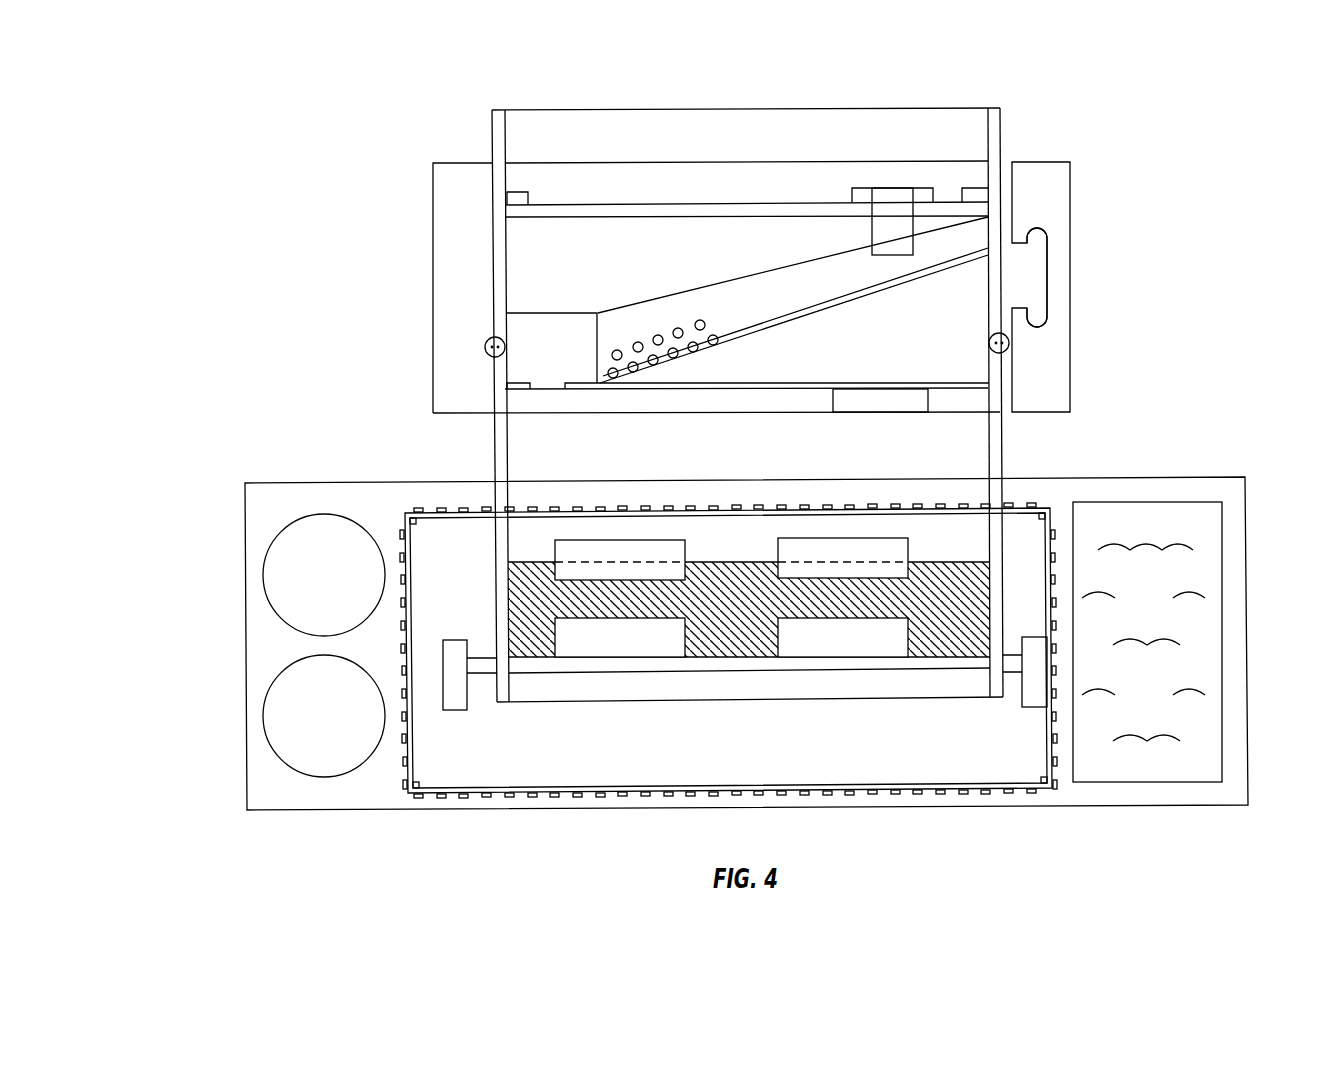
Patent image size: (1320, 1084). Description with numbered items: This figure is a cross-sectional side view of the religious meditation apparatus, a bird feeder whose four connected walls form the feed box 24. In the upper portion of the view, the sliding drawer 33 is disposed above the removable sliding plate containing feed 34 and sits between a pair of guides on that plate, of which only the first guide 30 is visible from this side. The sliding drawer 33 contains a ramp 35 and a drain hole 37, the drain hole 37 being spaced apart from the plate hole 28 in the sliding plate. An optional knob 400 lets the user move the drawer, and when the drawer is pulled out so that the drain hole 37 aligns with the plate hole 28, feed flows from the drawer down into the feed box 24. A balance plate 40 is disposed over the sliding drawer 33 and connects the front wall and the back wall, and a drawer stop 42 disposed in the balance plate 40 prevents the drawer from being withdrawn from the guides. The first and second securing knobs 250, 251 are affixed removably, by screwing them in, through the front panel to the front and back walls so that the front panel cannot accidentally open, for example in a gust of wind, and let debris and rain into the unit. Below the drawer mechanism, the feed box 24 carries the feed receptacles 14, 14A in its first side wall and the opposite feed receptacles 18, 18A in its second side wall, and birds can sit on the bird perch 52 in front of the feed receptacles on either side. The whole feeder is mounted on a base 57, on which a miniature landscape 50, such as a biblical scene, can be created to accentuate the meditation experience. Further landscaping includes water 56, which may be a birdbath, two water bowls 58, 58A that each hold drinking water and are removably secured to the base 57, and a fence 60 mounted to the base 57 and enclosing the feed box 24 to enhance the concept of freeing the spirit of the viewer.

The first feed receptacle 14 is at (875, 553).
The second feed receptacle 14A is at (640, 555).
The feed receptacle 18 is at (848, 637).
The feed receptacle 18A is at (608, 637).
The feed box 24 is at (953, 478).
The plate hole 28 is at (887, 405).
The first guide 30 is at (967, 382).
The sliding drawer 33 is at (1013, 177).
The removable sliding plate containing feed 34 is at (698, 323).
The ramp 35 is at (863, 293).
The drain hole 37 is at (543, 387).
The balance plate 40 is at (945, 197).
The drawer stop 42 is at (893, 188).
The miniature landscape 50 is at (868, 745).
The bird perch 52 is at (458, 640).
The water 56 is at (1202, 533).
The base 57 is at (260, 508).
The water bowl 58 is at (325, 582).
The water bowl 58A is at (325, 717).
The fence 60 is at (585, 795).
The first securing knob 250 is at (1010, 347).
The second securing knob 251 is at (485, 345).
The knob 400 is at (1037, 277).